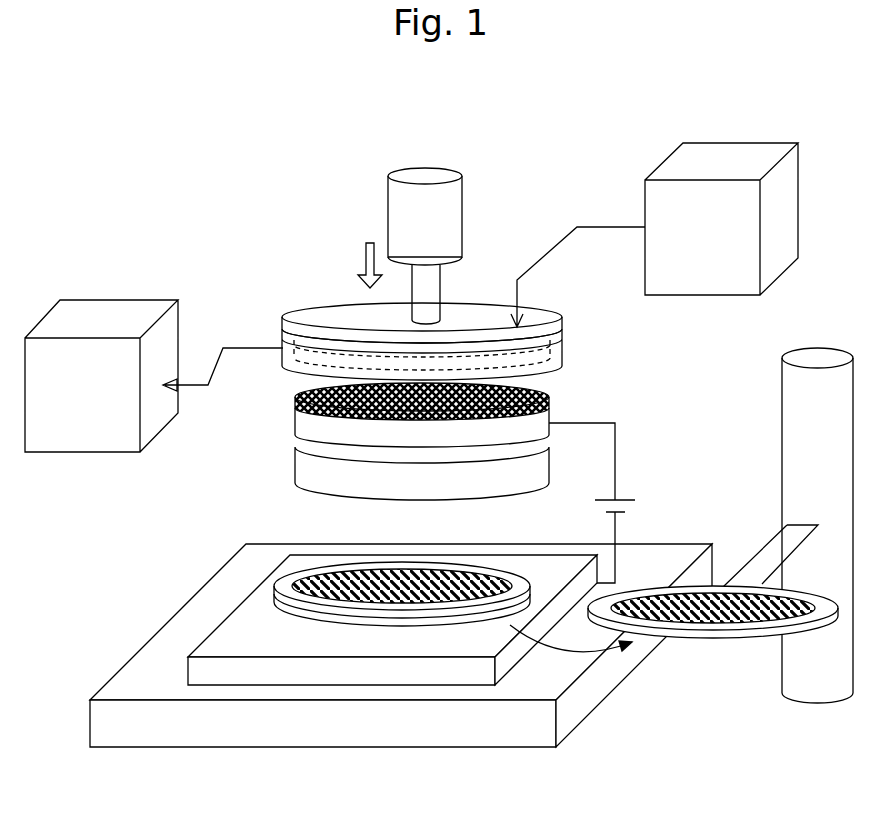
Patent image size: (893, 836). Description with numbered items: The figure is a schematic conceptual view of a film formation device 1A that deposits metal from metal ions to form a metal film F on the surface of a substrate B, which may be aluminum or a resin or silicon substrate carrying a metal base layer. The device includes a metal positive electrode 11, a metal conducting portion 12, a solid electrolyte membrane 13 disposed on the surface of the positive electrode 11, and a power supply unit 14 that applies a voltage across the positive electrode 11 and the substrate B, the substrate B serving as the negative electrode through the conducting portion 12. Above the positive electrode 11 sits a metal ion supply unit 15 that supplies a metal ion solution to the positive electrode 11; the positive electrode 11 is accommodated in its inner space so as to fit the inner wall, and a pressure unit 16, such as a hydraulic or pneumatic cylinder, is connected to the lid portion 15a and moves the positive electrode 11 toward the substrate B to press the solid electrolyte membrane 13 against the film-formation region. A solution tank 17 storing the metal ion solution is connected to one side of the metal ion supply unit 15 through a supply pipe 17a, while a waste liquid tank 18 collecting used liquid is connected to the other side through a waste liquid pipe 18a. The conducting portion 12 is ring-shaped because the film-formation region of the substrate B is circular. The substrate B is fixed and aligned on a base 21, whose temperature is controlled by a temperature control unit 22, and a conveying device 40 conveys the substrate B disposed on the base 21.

The film formation device 1A is at (170, 122).
The positive electrode 11 is at (295, 424).
The conducting portion 12 is at (278, 585).
The solid electrolyte membrane 13 is at (295, 481).
The power supply unit 14 is at (620, 500).
The metal ion supply unit 15 is at (283, 362).
The lid portion 15a is at (562, 348).
The pressure unit 16 is at (460, 227).
The solution tank 17 is at (668, 167).
The supply pipe 17a is at (592, 227).
The waste liquid tank 18 is at (136, 306).
The waste liquid pipe 18a is at (250, 348).
The base 21 is at (227, 637).
The temperature control unit 22 is at (170, 653).
The conveying device 40 is at (793, 485).
The metal film F is at (728, 587).
The substrate B is at (370, 627).